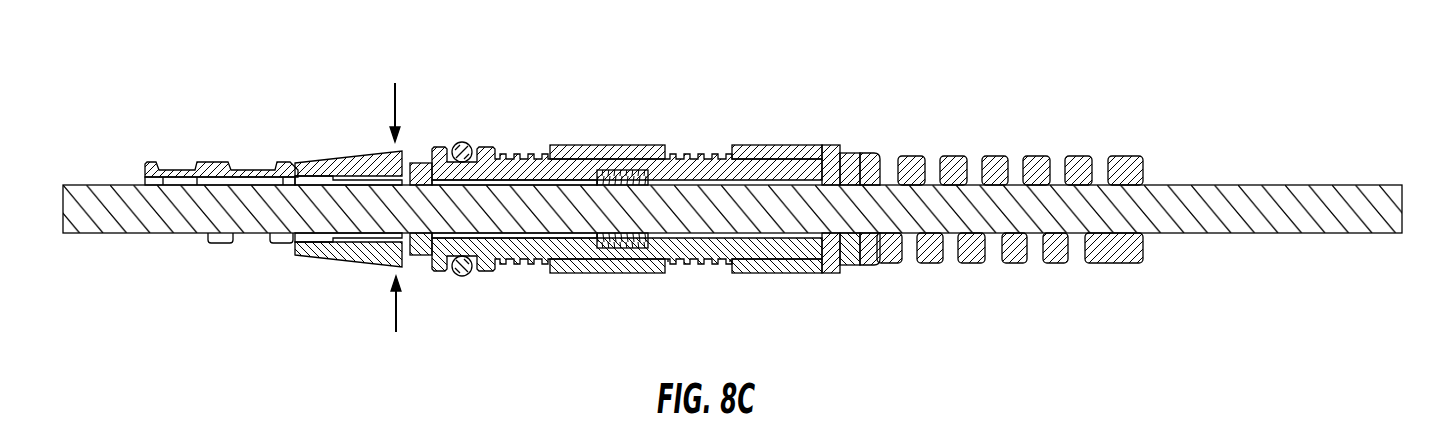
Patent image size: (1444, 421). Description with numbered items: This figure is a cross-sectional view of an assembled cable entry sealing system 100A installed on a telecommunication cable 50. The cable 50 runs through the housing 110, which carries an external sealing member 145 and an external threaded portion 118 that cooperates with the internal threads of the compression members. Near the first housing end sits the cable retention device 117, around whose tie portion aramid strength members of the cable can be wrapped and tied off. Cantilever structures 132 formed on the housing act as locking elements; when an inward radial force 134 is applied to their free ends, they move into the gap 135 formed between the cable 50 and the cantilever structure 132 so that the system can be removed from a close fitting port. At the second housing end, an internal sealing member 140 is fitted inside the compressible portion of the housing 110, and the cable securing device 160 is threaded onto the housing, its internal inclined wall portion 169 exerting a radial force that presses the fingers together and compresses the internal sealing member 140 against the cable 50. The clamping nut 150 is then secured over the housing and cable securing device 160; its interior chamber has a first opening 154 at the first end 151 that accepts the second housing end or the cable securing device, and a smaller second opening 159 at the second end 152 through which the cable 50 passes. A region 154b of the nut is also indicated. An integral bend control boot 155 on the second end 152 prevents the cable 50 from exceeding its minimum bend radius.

The telecommunication cable 50 is at (100, 185).
The cable entry sealing system 100A is at (898, 62).
The cable retention device 117 is at (178, 168).
The cantilever structure 132 is at (355, 163).
The gap 135 is at (313, 177).
The inward radial force 134 is at (395, 108).
The external threaded portion 118 is at (527, 153).
The housing 110 is at (508, 272).
The external sealing member 145 is at (467, 143).
The internal sealing member 140 is at (598, 270).
The cable securing device 160 is at (693, 140).
The internal inclined wall portion 169 is at (660, 267).
The first end 151 is at (728, 267).
The clamping nut 150 is at (830, 164).
The first opening 154 is at (730, 157).
The sleeve end 154b is at (858, 157).
The second opening 159 is at (827, 268).
The second end 152 is at (860, 262).
The bend control boot 155 is at (1055, 260).